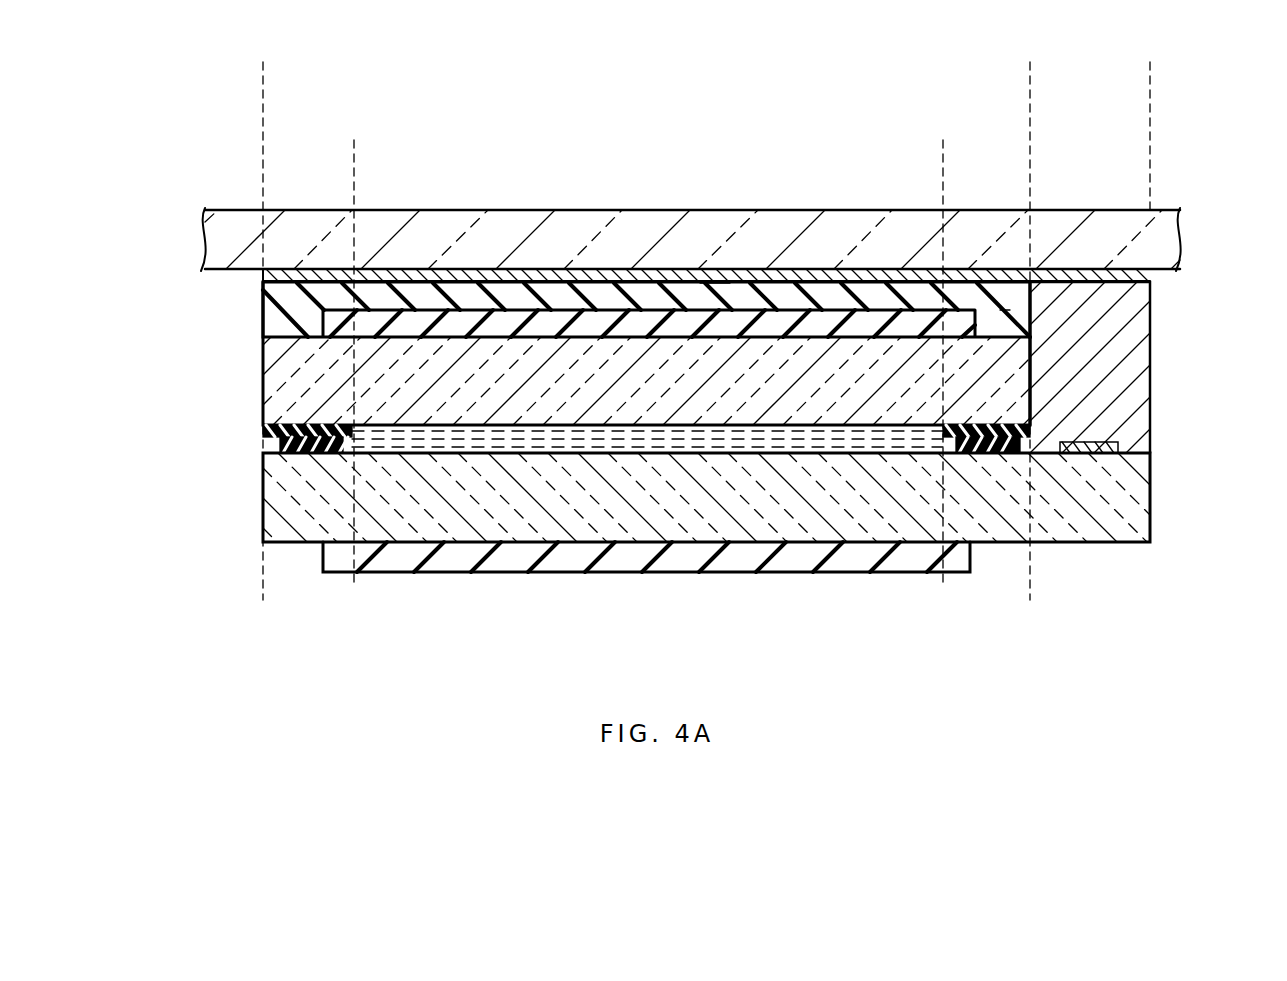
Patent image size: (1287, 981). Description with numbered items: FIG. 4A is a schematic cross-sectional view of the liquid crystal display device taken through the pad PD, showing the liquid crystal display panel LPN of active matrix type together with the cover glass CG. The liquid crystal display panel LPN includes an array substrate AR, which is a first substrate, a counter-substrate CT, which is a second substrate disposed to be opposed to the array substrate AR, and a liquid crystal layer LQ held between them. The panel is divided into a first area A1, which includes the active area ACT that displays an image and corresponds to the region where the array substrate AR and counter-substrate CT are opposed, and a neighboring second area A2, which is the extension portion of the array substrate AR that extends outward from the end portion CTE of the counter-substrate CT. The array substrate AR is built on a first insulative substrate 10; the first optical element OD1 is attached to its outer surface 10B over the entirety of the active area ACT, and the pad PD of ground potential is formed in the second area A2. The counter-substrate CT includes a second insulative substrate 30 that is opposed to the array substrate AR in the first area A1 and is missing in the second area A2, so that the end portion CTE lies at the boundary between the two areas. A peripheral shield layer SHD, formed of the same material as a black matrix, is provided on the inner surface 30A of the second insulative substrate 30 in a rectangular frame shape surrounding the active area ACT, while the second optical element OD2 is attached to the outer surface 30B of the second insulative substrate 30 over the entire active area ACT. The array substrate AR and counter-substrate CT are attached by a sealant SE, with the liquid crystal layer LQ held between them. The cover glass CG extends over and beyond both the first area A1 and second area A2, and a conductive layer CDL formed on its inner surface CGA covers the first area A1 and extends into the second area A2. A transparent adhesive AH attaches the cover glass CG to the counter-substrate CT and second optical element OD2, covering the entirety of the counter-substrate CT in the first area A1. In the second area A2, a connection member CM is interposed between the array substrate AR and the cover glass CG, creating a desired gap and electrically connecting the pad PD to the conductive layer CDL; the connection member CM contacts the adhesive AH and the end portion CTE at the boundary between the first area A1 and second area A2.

The first area A1 is at (263, 77).
The second area A2 is at (1030, 77).
The active area ACT is at (354, 150).
The cover glass CG is at (1170, 246).
The conductive layer CDL is at (265, 279).
The inner surface of the cover glass CGA is at (728, 286).
The outer surface of the second insulative substrate 30B is at (816, 334).
The transparent adhesive AH is at (1012, 320).
The connection member CM is at (1095, 292).
The second optical element OD2 is at (651, 324).
The second insulative substrate 30 is at (1010, 389).
The counter-substrate CT is at (262, 378).
The end portion of the counter-substrate CTE is at (1034, 362).
The inner surface of the second insulative substrate 30A is at (887, 430).
The peripheral shield layer SHD is at (270, 431).
The sealant SE is at (283, 446).
The liquid crystal layer LQ is at (473, 447).
The pad PD is at (1108, 443).
The first insulative substrate 10 is at (1126, 500).
The array substrate AR is at (262, 510).
The outer surface of the first insulative substrate 10B is at (705, 549).
The first optical element OD1 is at (793, 557).
The liquid crystal display panel LPN is at (260, 548).